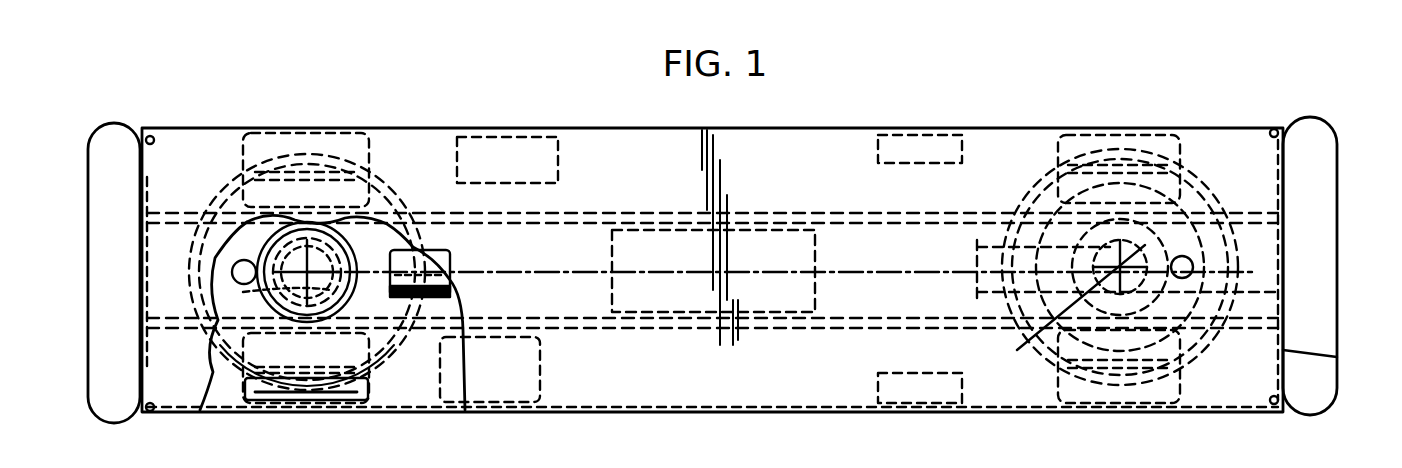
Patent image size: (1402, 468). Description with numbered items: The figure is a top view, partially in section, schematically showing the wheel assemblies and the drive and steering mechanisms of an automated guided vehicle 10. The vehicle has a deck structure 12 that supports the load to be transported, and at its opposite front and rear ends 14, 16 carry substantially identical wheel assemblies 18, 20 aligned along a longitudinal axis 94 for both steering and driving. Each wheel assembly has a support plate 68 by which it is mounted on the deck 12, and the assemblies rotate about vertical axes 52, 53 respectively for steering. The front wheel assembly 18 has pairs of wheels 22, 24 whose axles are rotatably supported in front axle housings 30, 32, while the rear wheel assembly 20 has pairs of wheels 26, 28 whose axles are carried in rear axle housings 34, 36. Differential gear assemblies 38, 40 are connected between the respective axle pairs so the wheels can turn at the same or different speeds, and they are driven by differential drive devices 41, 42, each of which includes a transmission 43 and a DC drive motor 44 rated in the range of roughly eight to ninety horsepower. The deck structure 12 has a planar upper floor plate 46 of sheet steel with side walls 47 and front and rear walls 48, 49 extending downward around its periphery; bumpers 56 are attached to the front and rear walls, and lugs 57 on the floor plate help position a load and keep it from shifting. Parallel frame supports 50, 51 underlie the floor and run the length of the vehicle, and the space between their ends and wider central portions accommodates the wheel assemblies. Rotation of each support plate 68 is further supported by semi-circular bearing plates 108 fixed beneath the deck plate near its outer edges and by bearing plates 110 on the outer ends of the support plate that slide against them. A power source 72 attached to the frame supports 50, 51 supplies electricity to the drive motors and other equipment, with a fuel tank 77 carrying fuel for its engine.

The automated guided vehicle 10 is at (878, 122).
The vehicle deck structure 12 is at (832, 400).
The front end 14 is at (1192, 135).
The rear end 16 is at (192, 140).
The front wheel assembly 18 is at (1031, 376).
The rear wheel assembly 20 is at (398, 363).
The pair of wheels 22 is at (1115, 378).
The pair of wheels 24 is at (1098, 135).
The pair of wheels 26 is at (378, 398).
The pair of wheels 28 is at (287, 135).
The front axle housing 30 is at (1280, 287).
The front axle housing 32 is at (1120, 240).
The rear axle housing 34 is at (290, 388).
The rear axle housing 36 is at (350, 150).
The differential gear assembly 38 is at (1187, 213).
The differential gear assembly 40 is at (223, 187).
The differential drive device 41 is at (986, 290).
The differential drive device 42 is at (414, 266).
The transmission 43 is at (372, 215).
The drive motor 44 is at (405, 228).
The upper floor plate 46 is at (676, 388).
The side walls 47 is at (574, 127).
The front wall 48 is at (1320, 355).
The rear wall 49 is at (142, 237).
The frame support 50 is at (675, 212).
The frame support 51 is at (748, 305).
The vertical axis 52 is at (1066, 308).
The vertical axis 53 is at (450, 298).
The bumpers 56 is at (95, 357).
The lugs 57 is at (146, 418).
The support plate 68 is at (243, 292).
The power source 72 is at (769, 230).
The fuel tank 77 is at (540, 364).
The longitudinal axis 94 is at (580, 272).
The bearing plates 108 is at (158, 124).
The bearing plates 110 is at (320, 395).